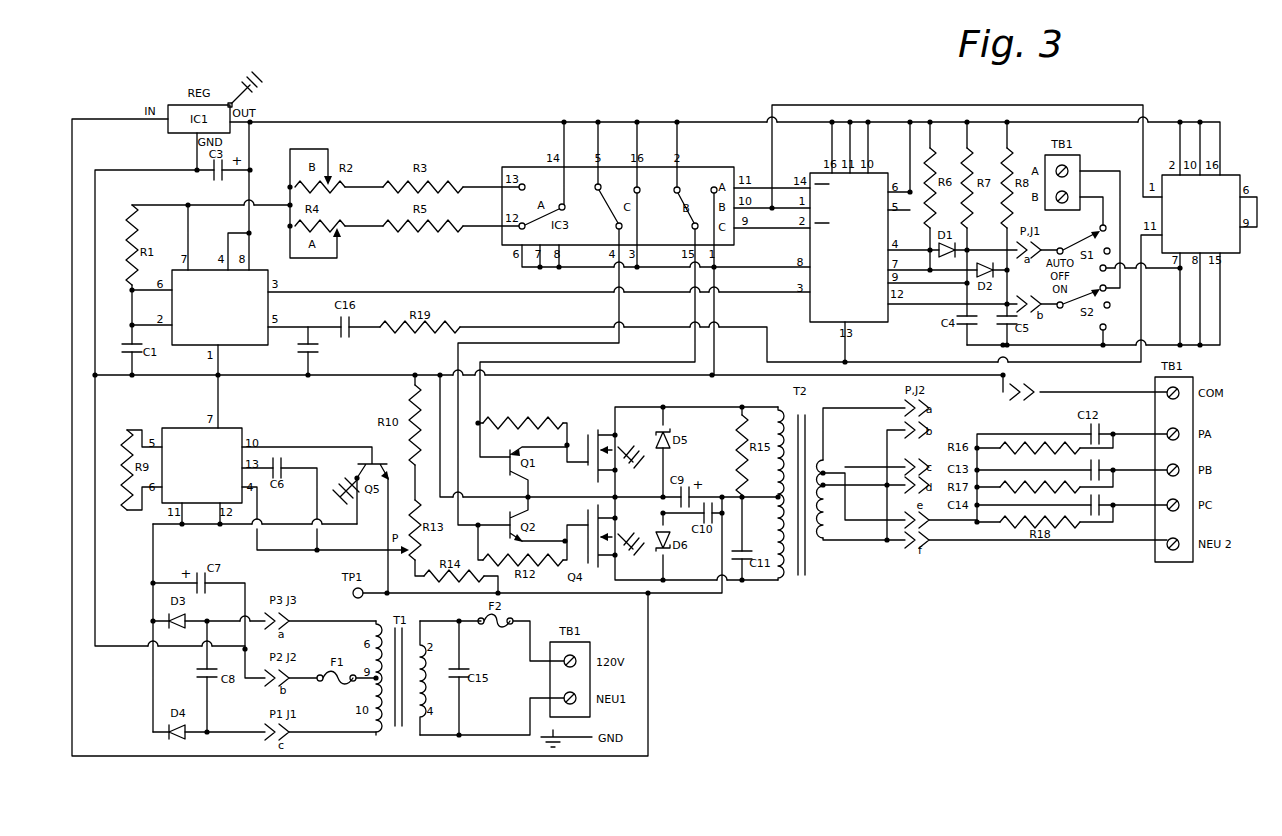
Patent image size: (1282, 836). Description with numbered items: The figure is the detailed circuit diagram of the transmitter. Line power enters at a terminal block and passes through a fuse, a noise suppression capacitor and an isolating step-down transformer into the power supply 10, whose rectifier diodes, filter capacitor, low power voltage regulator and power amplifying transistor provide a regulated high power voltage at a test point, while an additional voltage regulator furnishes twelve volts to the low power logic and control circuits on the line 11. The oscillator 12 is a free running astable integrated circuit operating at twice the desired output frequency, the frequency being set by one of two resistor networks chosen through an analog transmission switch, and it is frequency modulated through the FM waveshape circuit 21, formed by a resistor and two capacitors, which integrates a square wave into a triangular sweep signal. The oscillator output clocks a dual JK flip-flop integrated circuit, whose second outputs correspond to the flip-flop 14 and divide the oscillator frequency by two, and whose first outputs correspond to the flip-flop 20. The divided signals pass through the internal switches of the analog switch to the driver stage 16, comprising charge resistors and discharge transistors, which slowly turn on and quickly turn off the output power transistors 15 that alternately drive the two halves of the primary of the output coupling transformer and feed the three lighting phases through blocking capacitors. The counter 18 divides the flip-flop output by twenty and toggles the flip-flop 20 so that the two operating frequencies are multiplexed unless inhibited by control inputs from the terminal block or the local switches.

The power supply 10 is at (140, 549).
The 12 VDC line 11 is at (379, 121).
The oscillator 12 is at (253, 266).
The flip-flop 14 is at (849, 247).
The flip-flop 20 is at (838, 211).
The output power transistors 15 is at (604, 414).
The driver stage 16 is at (546, 415).
The counter 18 is at (1241, 262).
The FM waveshape circuit 21 is at (344, 362).